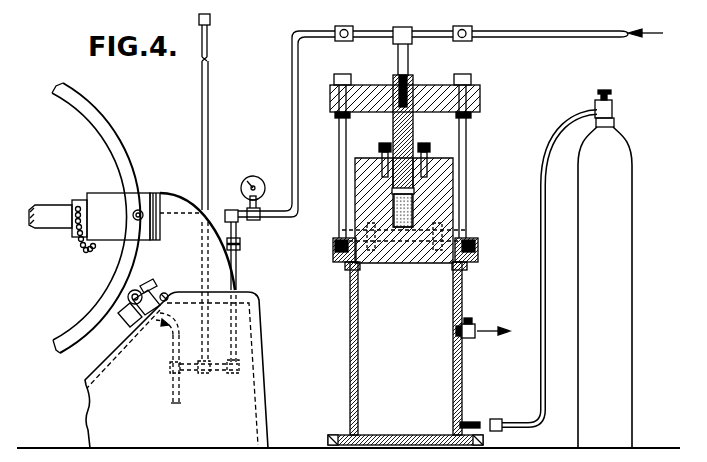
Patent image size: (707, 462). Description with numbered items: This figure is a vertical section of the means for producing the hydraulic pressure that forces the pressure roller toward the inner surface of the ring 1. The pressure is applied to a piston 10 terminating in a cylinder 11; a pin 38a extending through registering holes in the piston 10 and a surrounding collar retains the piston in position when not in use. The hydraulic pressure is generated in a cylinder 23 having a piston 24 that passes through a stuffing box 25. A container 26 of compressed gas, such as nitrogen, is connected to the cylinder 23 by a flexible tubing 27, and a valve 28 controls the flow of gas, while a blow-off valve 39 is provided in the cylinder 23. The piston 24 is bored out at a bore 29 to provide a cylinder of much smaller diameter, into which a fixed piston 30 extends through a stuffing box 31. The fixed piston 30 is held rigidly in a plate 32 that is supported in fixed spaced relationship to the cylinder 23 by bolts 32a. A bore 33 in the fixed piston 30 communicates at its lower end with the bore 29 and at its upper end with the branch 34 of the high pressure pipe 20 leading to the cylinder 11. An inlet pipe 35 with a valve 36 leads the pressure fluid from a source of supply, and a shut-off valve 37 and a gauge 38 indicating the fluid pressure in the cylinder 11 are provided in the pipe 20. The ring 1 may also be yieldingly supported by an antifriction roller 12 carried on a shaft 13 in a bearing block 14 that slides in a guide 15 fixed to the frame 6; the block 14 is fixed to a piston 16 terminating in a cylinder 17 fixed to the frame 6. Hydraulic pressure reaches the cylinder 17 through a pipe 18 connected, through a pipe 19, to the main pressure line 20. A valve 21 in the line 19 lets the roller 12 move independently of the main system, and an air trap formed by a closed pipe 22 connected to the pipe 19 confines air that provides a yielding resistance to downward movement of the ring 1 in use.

The ring 1 is at (100, 118).
The frame 6 is at (255, 347).
The piston 10 is at (47, 224).
The cylinder 11 is at (141, 194).
The antifriction roller 12 is at (120, 314).
The shaft 13 is at (137, 289).
The bearing block 14 is at (136, 316).
The guide 15 is at (157, 283).
The piston 16 is at (166, 294).
The cylinder 17 is at (152, 331).
The pipe 18 is at (170, 365).
The pipe 19 is at (238, 267).
The high pressure pipe 20 is at (292, 100).
The valve 21 is at (241, 242).
The closed pipe 22 is at (208, 125).
The cylinder 23 is at (463, 294).
The piston 24 is at (447, 200).
The stuffing box 25 is at (467, 228).
The container of compressed gas 26 is at (621, 283).
The tubing 27 is at (541, 268).
The valve 28 is at (613, 98).
The bore 29 is at (413, 200).
The fixed piston 30 is at (413, 128).
The stuffing box 31 is at (379, 149).
The plate 32 is at (437, 83).
The bolt 32a is at (342, 177).
The bore 33 is at (398, 125).
The branch 34 is at (408, 61).
The inlet pipe 35 is at (523, 38).
The valve 36 is at (472, 28).
The shut-off valve 37 is at (356, 33).
The gauge 38 is at (251, 179).
The pin 38a is at (78, 207).
The blow-off valve 39 is at (470, 338).